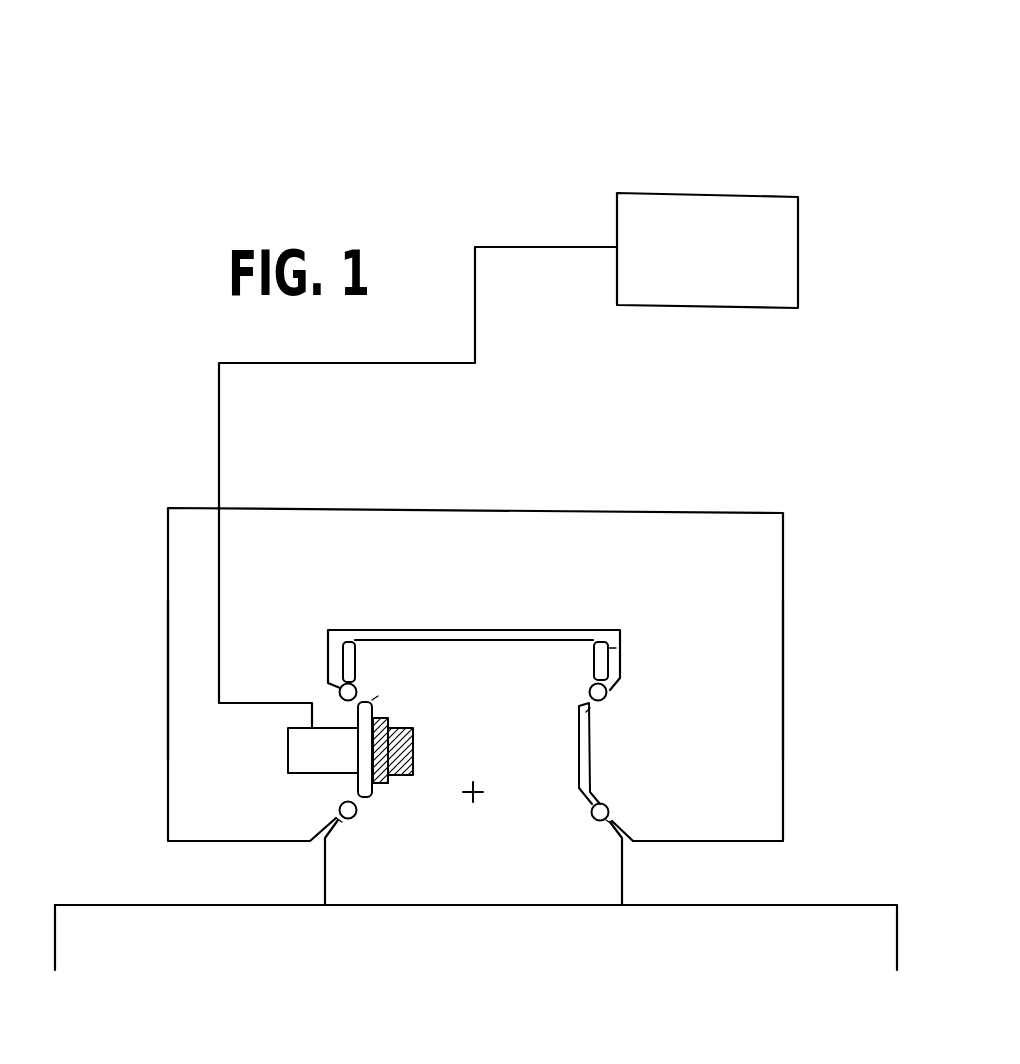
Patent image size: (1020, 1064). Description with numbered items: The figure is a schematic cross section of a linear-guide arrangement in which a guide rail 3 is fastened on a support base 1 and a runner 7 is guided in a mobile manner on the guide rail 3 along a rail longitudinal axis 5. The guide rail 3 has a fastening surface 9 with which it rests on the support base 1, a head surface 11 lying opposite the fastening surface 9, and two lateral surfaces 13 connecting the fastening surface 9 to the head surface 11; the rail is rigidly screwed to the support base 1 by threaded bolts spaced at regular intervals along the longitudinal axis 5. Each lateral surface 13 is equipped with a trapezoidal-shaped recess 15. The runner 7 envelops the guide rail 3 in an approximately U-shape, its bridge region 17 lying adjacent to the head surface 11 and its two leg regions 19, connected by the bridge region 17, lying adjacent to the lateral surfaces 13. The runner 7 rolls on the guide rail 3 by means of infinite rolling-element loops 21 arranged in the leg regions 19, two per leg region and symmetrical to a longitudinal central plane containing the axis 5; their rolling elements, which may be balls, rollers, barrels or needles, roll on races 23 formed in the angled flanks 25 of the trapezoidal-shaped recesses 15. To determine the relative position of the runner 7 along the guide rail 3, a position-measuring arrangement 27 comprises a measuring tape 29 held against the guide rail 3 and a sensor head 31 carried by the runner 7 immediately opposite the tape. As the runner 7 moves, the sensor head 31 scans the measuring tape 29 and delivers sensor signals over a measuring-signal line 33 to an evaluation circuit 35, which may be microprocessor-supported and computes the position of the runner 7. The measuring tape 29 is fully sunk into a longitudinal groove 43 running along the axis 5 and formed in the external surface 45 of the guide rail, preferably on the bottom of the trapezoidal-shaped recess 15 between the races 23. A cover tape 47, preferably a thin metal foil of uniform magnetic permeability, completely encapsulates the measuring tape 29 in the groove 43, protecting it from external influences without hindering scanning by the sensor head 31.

The support base 1 is at (842, 937).
The guide rail 3 is at (600, 887).
The rail longitudinal axis 5 is at (477, 798).
The runner 7 is at (488, 642).
The fastening surface 9 is at (492, 890).
The head surface 11 is at (546, 632).
The lateral surfaces 13 is at (322, 887).
The trapezoidal-shaped recess 15 is at (358, 762).
The bridge region 17 is at (523, 535).
The leg regions 19 is at (183, 676).
The rolling-element loops 21 is at (340, 688).
The races 23 is at (353, 645).
The angled flanks 25 is at (370, 700).
The position-measuring arrangement 27 is at (699, 158).
The measuring tape 29 is at (400, 777).
The sensor head 31 is at (290, 752).
The measuring-signal line 33 is at (514, 247).
The evaluation circuit 35 is at (727, 222).
The longitudinal groove 43 is at (413, 742).
The external surface of the guide rail 45 is at (610, 650).
The cover tape 47 is at (383, 786).